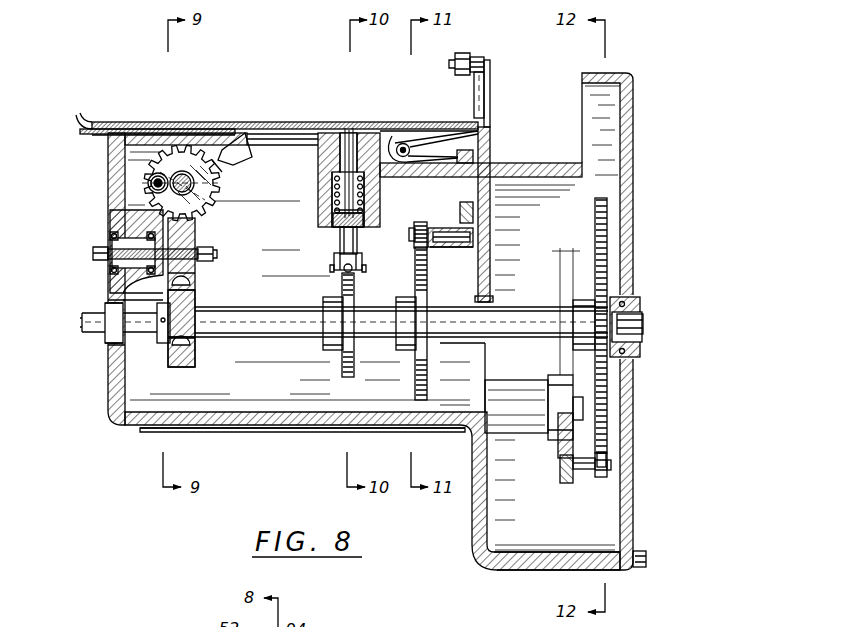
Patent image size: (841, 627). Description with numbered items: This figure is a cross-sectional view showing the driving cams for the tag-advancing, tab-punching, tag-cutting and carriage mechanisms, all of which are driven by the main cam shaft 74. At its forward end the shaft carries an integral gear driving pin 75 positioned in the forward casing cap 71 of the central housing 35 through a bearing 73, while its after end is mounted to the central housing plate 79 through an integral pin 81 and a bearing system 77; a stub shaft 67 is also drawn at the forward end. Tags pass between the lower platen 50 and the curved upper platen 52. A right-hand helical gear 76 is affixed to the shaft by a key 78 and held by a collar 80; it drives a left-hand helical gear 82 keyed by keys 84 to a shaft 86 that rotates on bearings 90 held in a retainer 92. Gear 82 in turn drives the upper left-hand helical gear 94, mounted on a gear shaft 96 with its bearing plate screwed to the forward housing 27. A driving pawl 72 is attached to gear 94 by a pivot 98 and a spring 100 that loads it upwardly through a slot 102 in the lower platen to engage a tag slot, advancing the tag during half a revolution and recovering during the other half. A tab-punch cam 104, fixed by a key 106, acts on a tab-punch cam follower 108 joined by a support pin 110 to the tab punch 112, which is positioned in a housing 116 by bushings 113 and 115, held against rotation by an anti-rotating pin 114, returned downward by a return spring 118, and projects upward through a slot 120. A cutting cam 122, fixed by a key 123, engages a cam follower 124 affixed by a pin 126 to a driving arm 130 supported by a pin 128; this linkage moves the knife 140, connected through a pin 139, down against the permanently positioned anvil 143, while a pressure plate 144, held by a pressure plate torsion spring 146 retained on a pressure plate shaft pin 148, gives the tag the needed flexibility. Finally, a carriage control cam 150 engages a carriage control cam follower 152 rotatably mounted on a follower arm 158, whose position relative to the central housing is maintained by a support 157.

The forward housing 27 is at (253, 427).
The central housing 35 is at (515, 571).
The lower platen 50 is at (225, 128).
The upper platen 52 is at (202, 122).
The input shaft end 67 is at (82, 323).
The forward casing cap 71 is at (112, 400).
The driving pawl 72 is at (242, 163).
The bearing 73 is at (107, 341).
The main cam shaft 74 is at (258, 340).
The gear driving pin 75 is at (113, 369).
The right-hand helical gear 76 is at (188, 366).
The bearing system 77 is at (635, 304).
The key 78 is at (197, 347).
The central housing plate 79 is at (628, 282).
The collar 80 is at (163, 345).
The pin 81 is at (643, 324).
The left-hand helical gear 82 is at (196, 233).
The keys 84 is at (200, 268).
The shaft 86 is at (106, 266).
The bearings 90 is at (108, 230).
The retainer 92 is at (110, 238).
The upper left-hand helical gear 94 is at (150, 173).
The gear shaft 96 is at (182, 176).
The pivot 98 is at (158, 175).
The spring 100 is at (231, 168).
The slot 102 is at (265, 130).
The tab-punch cam 104 is at (341, 363).
The key 106 is at (350, 297).
The tab-punch cam follower 108 is at (341, 270).
The support pin 110 is at (334, 260).
The tab punch 112 is at (350, 127).
The bushing 113 is at (337, 205).
The anti-rotating pin 114 is at (360, 218).
The bushing 115 is at (340, 172).
The housing 116 is at (357, 213).
The return spring 118 is at (332, 176).
The slot 120 is at (338, 127).
The cutting cam 122 is at (414, 373).
The key 123 is at (402, 300).
The cam follower 124 is at (415, 234).
The pin 126 is at (447, 240).
The pin 128 is at (454, 248).
The driving arm 130 is at (464, 205).
The pin 139 is at (462, 55).
The knife 140 is at (480, 56).
The anvil 143 is at (489, 100).
The pressure plate 144 is at (462, 130).
The pressure plate torsion spring 146 is at (410, 140).
The pressure plate shaft pin 148 is at (397, 142).
The carriage control cam 150 is at (603, 226).
The carriage control cam follower 152 is at (600, 478).
The support 157 is at (510, 433).
The follower arm 158 is at (568, 483).